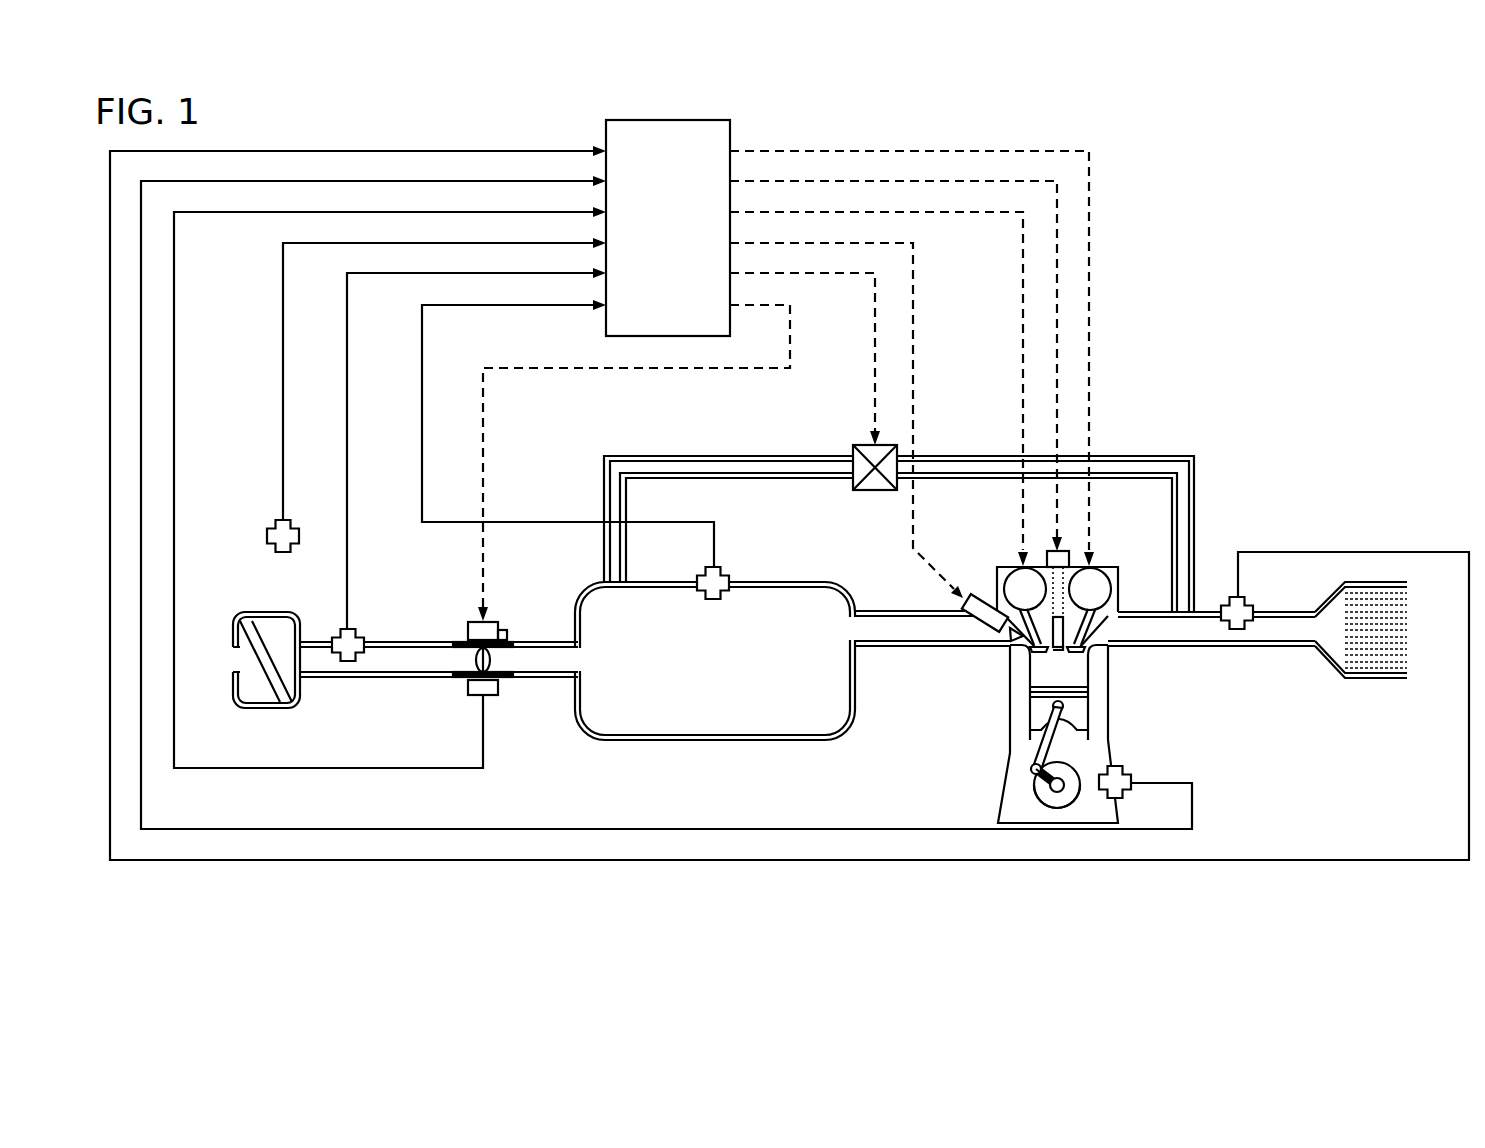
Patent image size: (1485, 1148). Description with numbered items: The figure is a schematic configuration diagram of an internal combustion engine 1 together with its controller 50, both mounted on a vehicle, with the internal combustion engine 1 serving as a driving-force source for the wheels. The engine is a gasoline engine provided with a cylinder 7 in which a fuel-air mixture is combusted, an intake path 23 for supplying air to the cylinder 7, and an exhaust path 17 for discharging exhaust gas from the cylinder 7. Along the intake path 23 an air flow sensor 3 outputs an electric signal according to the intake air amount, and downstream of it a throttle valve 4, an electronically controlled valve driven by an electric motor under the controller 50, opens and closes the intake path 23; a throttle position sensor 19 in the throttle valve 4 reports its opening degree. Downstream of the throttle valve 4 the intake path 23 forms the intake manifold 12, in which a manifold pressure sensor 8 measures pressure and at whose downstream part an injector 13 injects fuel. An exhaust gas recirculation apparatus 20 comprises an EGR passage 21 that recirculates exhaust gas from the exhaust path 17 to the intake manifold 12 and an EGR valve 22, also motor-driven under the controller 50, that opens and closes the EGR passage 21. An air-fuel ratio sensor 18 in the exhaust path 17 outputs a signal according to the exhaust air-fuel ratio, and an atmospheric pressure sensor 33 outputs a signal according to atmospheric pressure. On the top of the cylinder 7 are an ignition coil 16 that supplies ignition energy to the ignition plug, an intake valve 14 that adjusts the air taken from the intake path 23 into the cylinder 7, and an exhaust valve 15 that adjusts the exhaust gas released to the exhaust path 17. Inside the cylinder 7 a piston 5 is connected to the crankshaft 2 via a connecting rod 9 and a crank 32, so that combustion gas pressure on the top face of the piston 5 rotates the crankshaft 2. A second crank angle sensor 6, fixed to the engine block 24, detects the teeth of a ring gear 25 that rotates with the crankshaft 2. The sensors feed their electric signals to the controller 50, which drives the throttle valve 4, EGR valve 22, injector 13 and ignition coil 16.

The internal combustion engine 1 is at (1148, 370).
The crankshaft 2 is at (1060, 790).
The air flow sensor 3 is at (365, 628).
The throttle valve 4 is at (500, 622).
The piston 5 is at (1042, 703).
The second crank angle sensor 6 is at (1127, 793).
The cylinder 7 is at (1090, 673).
The manifold pressure sensor 8 is at (725, 572).
The connecting rod 9 is at (1042, 742).
The intake manifold 12 is at (735, 728).
The injector 13 is at (985, 620).
The intake valve 14 is at (1013, 583).
The exhaust valve 15 is at (1097, 583).
The ignition coil 16 is at (1075, 548).
The exhaust path 17 is at (1177, 630).
The air-fuel ratio sensor 18 is at (1245, 600).
The throttle position sensor 19 is at (495, 697).
The exhaust gas recirculation apparatus 20 is at (1178, 446).
The EGR passage 21 is at (1195, 482).
The EGR valve 22 is at (851, 445).
The intake path 23 is at (383, 663).
The engine block 24 is at (1112, 740).
The ring gear 25 is at (1047, 805).
The crank 32 is at (1035, 778).
The atmospheric pressure sensor 33 is at (278, 518).
The controller 50 is at (715, 141).